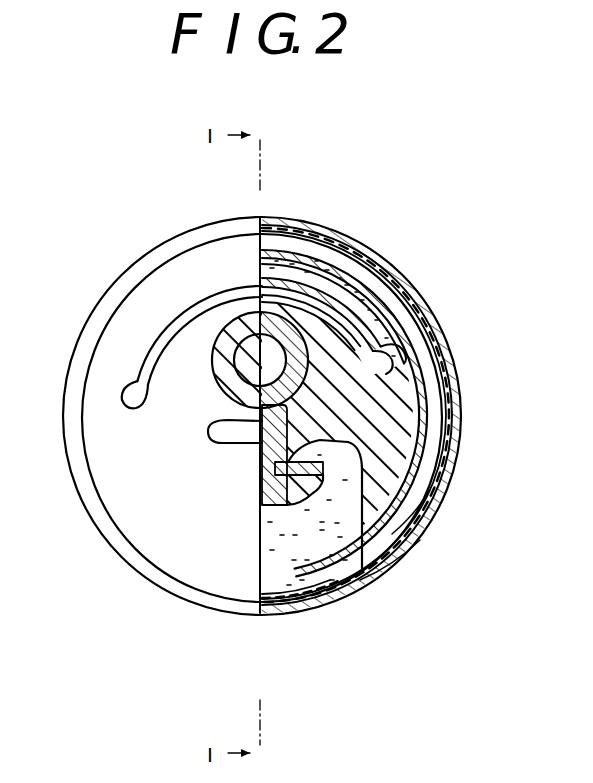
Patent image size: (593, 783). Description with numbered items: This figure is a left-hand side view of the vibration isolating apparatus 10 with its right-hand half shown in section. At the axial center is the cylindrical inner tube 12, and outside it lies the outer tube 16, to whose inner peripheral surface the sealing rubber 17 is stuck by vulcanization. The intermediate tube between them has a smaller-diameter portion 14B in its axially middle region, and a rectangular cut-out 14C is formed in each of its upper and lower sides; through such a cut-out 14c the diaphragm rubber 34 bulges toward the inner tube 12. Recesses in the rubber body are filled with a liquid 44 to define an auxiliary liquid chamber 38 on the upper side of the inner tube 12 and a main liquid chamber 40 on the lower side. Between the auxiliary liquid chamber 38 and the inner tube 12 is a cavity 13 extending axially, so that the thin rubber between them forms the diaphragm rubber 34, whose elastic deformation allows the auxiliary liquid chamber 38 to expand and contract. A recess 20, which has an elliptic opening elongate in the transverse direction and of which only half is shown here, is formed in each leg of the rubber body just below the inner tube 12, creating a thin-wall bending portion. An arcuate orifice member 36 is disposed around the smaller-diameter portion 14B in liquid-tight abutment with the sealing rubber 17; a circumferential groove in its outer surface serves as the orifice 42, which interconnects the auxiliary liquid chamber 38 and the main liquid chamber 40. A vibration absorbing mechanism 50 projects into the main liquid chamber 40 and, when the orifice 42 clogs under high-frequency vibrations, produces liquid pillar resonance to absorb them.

The vibration isolating apparatus 10 is at (356, 212).
The inner tube 12 is at (247, 353).
The cavity 13 is at (130, 398).
The smaller-diameter portion 14B is at (455, 405).
The cut-out 14c is at (398, 352).
The cut-out 14C is at (415, 555).
The outer tube 16 is at (396, 300).
The sealing rubber 17 is at (455, 437).
The recess 20 is at (232, 437).
The diaphragm rubber 34 is at (340, 296).
The orifice member 36 is at (427, 352).
The auxiliary liquid chamber 38 is at (312, 270).
The main liquid chamber 40 is at (288, 572).
The orifice 42 is at (410, 512).
The liquid 44 is at (372, 560).
The vibration absorbing mechanism 50 is at (311, 508).